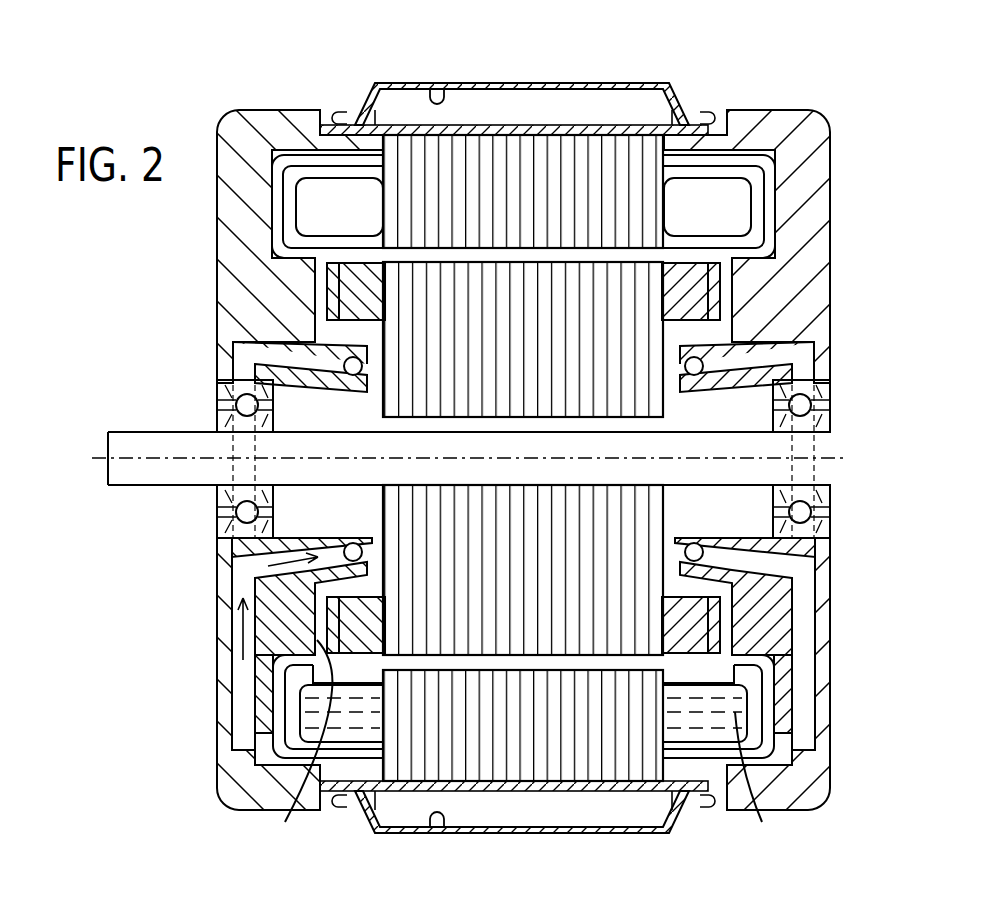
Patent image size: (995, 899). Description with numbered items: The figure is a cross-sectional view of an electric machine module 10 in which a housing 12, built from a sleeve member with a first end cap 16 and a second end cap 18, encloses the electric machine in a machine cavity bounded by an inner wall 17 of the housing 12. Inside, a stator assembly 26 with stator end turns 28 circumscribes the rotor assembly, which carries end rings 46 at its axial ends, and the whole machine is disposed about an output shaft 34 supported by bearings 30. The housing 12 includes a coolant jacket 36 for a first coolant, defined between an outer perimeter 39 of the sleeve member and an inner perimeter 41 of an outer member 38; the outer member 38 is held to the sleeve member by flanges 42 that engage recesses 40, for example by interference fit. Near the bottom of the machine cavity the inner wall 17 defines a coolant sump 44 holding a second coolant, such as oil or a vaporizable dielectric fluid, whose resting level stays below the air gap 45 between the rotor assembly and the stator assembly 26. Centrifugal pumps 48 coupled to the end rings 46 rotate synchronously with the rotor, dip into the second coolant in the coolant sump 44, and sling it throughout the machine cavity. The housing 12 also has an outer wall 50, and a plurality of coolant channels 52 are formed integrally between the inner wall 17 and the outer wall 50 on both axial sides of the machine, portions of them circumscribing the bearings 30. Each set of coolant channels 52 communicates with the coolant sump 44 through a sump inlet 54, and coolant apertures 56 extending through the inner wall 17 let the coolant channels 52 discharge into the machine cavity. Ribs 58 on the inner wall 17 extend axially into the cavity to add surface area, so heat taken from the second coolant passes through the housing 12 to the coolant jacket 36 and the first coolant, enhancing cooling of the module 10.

The electric machine module 10 is at (764, 30).
The housing 12 is at (270, 110).
The first end cap 16 is at (224, 127).
The inner wall 17 is at (306, 751).
The second end cap 18 is at (825, 135).
The stator assembly 26 is at (402, 142).
The stator end turns 28 is at (320, 192).
The bearings 30 is at (815, 405).
The output shaft 34 is at (155, 432).
The coolant jacket 36 is at (600, 105).
The outer member 38 is at (545, 82).
The outer perimeter 39 is at (500, 124).
The recesses 40 is at (707, 112).
The inner perimeter 41 is at (437, 84).
The flanges 42 is at (694, 122).
The coolant sump 44 is at (761, 783).
The air gap 45 is at (640, 662).
The end rings 46 is at (700, 266).
The centrifugal pumps 48 is at (722, 290).
The outer wall 50 is at (222, 704).
The coolant channels 52 is at (242, 350).
The sump inlet 54 is at (275, 752).
The coolant apertures 56 is at (350, 363).
The rib 58 is at (775, 200).